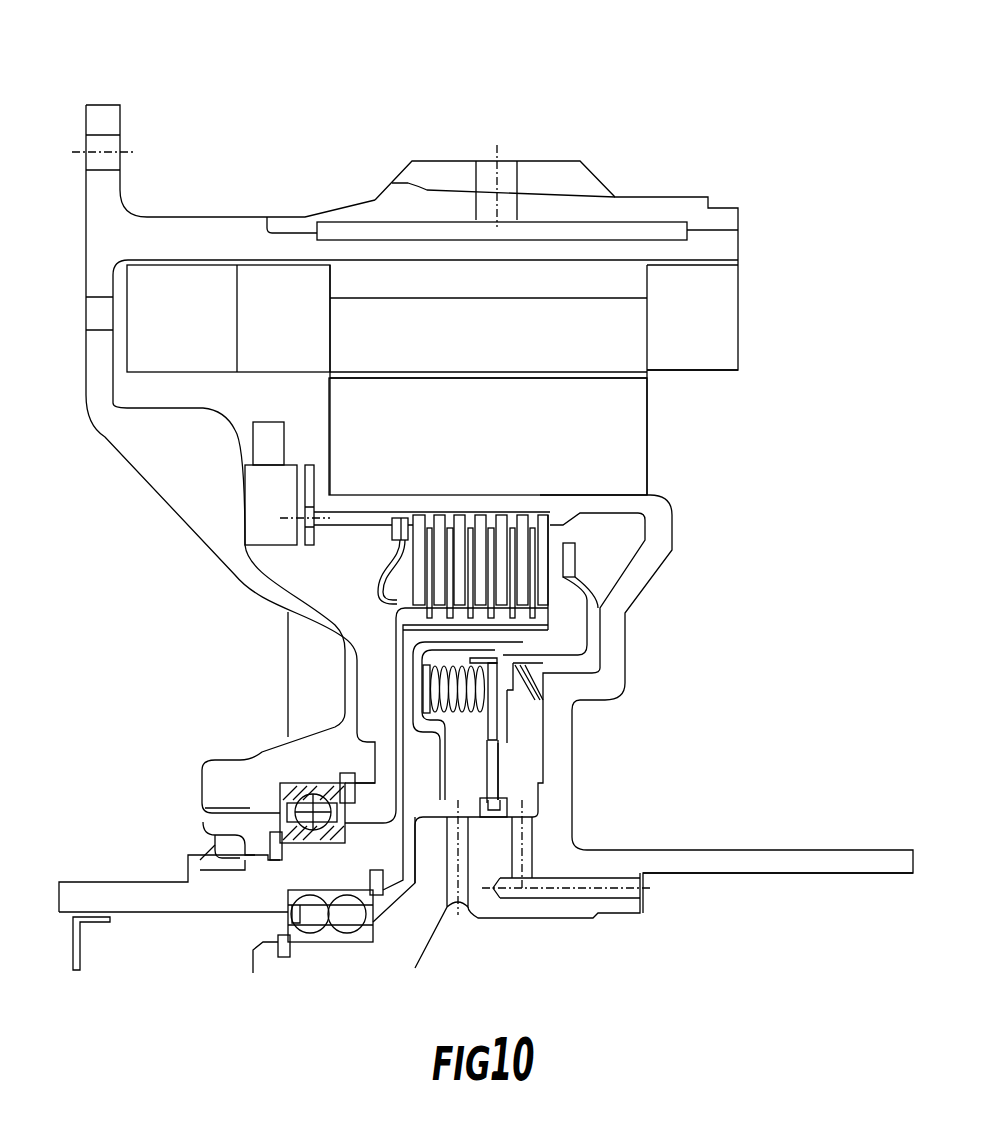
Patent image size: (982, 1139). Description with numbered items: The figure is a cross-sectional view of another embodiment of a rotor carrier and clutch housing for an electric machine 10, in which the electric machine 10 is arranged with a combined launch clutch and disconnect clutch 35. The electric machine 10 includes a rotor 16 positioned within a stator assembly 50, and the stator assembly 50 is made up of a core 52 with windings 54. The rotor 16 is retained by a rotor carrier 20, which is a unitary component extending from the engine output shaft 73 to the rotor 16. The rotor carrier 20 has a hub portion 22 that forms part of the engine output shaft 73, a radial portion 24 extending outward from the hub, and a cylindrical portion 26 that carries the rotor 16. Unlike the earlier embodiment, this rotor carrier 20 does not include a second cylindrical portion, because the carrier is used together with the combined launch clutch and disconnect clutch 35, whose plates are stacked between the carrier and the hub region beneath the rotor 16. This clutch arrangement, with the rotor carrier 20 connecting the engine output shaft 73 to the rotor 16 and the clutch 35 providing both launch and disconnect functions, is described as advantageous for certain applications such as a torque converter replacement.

The electric machine 10 is at (800, 93).
The rotor 16 is at (628, 437).
The rotor carrier 20 is at (660, 525).
The hub portion 22 is at (715, 858).
The radial portion 24 is at (613, 638).
The cylindrical portion 26 is at (525, 505).
The combined launch clutch and disconnect clutch 35 is at (520, 571).
The stator assembly 50 is at (752, 279).
The core 52 is at (603, 313).
The windings 54 is at (717, 335).
The engine output shaft 73 is at (758, 865).